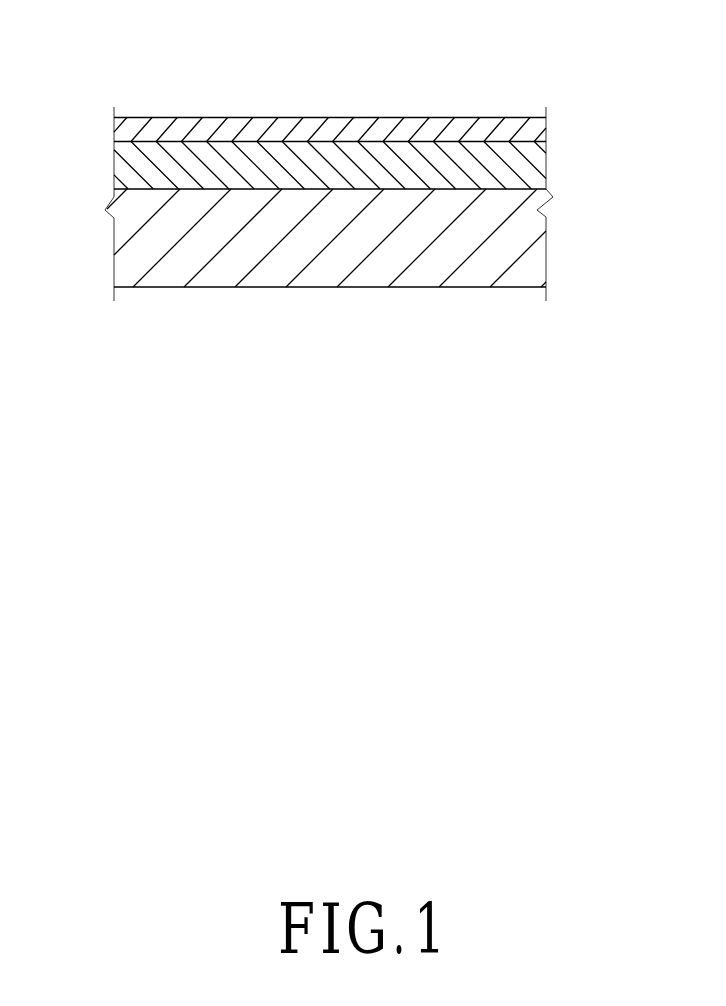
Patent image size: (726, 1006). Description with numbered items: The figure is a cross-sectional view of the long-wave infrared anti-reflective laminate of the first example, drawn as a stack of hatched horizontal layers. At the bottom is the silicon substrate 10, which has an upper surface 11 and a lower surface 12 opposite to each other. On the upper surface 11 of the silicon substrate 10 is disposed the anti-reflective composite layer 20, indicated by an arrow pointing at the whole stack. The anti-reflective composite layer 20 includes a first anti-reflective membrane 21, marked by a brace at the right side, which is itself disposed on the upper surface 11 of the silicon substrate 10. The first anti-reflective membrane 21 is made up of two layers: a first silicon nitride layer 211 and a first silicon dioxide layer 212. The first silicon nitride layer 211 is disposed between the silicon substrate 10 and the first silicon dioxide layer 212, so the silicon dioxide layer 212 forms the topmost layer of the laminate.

The anti-reflective composite layer 20 is at (342, 191).
The silicon substrate 10 is at (342, 255).
The upper surface 11 is at (152, 188).
The lower surface 12 is at (208, 288).
The first anti-reflective membrane 21 is at (331, 122).
The first silicon nitride layer 211 is at (232, 148).
The first silicon dioxide layer 212 is at (153, 122).